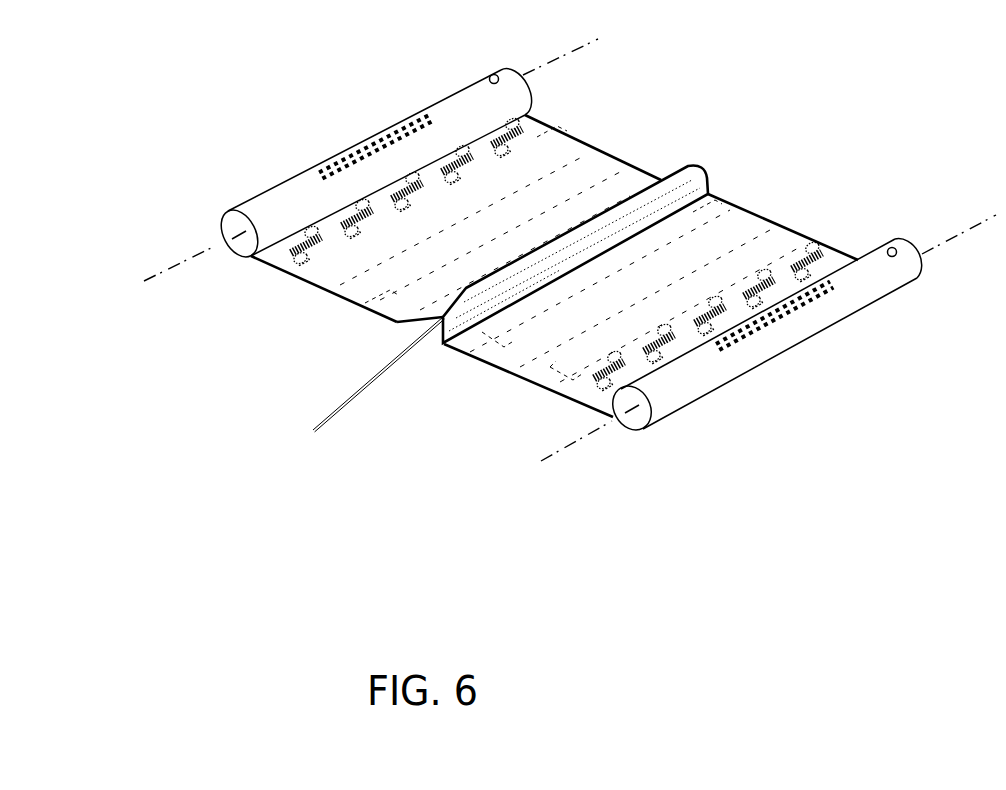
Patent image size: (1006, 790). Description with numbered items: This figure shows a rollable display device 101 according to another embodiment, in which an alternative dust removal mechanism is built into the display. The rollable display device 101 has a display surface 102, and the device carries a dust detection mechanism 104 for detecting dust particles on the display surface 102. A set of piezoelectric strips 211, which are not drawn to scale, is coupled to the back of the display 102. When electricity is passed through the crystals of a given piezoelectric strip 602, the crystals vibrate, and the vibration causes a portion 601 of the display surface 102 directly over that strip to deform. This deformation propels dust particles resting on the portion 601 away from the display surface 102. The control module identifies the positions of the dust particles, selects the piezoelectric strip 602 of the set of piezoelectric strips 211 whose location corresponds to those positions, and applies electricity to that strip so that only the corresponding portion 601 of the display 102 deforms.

The rollable display device 101 is at (377, 137).
The display surface 102 is at (597, 140).
The dust detection mechanism 104 is at (375, 172).
The piezoelectric strips 211 is at (380, 303).
The portion of the display surface 601 is at (358, 392).
The piezoelectric strip 602 is at (680, 167).